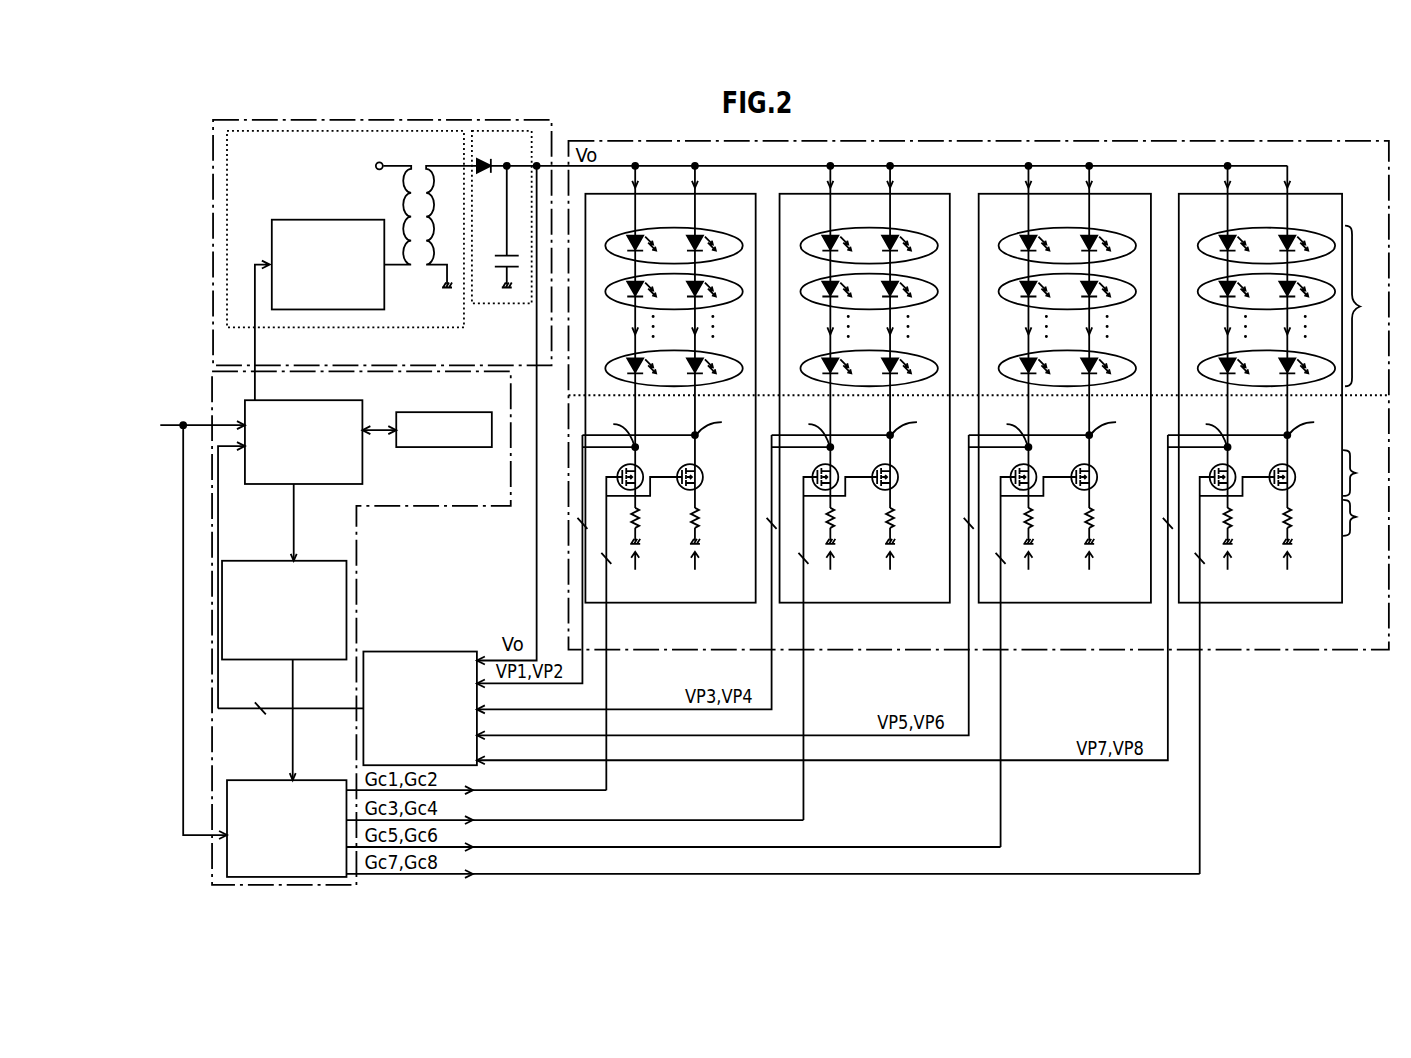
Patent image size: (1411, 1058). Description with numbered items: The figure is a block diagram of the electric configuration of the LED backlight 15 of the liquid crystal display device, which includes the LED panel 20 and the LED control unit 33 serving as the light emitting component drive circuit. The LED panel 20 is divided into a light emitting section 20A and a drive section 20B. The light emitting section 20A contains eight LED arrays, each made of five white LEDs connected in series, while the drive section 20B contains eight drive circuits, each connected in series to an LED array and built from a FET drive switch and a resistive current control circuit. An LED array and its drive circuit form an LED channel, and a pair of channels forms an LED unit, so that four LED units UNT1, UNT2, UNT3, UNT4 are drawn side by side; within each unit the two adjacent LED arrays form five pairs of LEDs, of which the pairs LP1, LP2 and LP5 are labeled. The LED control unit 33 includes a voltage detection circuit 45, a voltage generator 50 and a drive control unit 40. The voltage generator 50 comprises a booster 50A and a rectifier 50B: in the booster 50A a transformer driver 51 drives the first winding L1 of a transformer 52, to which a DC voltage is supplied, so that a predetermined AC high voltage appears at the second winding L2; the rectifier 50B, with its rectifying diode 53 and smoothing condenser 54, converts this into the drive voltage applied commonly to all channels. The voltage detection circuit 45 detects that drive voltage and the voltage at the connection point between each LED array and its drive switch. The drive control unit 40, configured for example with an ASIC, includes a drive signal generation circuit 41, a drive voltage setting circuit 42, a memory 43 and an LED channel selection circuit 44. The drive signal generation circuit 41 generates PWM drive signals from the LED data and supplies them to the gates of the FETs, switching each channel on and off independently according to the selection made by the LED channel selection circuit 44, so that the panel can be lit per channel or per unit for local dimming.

The LED backlight 15 is at (1256, 858).
The LED panel 20 is at (1310, 142).
The light emitting section 20A is at (1385, 174).
The drive section 20B is at (1383, 634).
The LED control unit 33 is at (206, 143).
The drive control unit 40 is at (212, 378).
The drive signal generation circuit 41 is at (255, 783).
The drive voltage setting circuit 42 is at (312, 490).
The memory 43 is at (419, 414).
The LED channel selection circuit 44 is at (252, 563).
The voltage detection circuit 45 is at (364, 735).
The voltage generator 50 is at (213, 252).
The booster 50A is at (380, 330).
The rectifier 50B is at (495, 308).
The transformer driver 51 is at (310, 221).
The transformer 52 is at (420, 234).
The rectifying diode 53 is at (489, 160).
The smoothing condenser 54 is at (503, 254).
The first winding L1 is at (397, 162).
The second winding L2 is at (451, 162).
The pair of LEDs LP1 is at (614, 240).
The pair of LEDs LP2 is at (612, 302).
The pair of LEDs LP5 is at (736, 360).
The LED unit UNT1 is at (640, 605).
The LED unit UNT2 is at (836, 605).
The LED unit UNT3 is at (1035, 605).
The LED unit UNT4 is at (1235, 605).